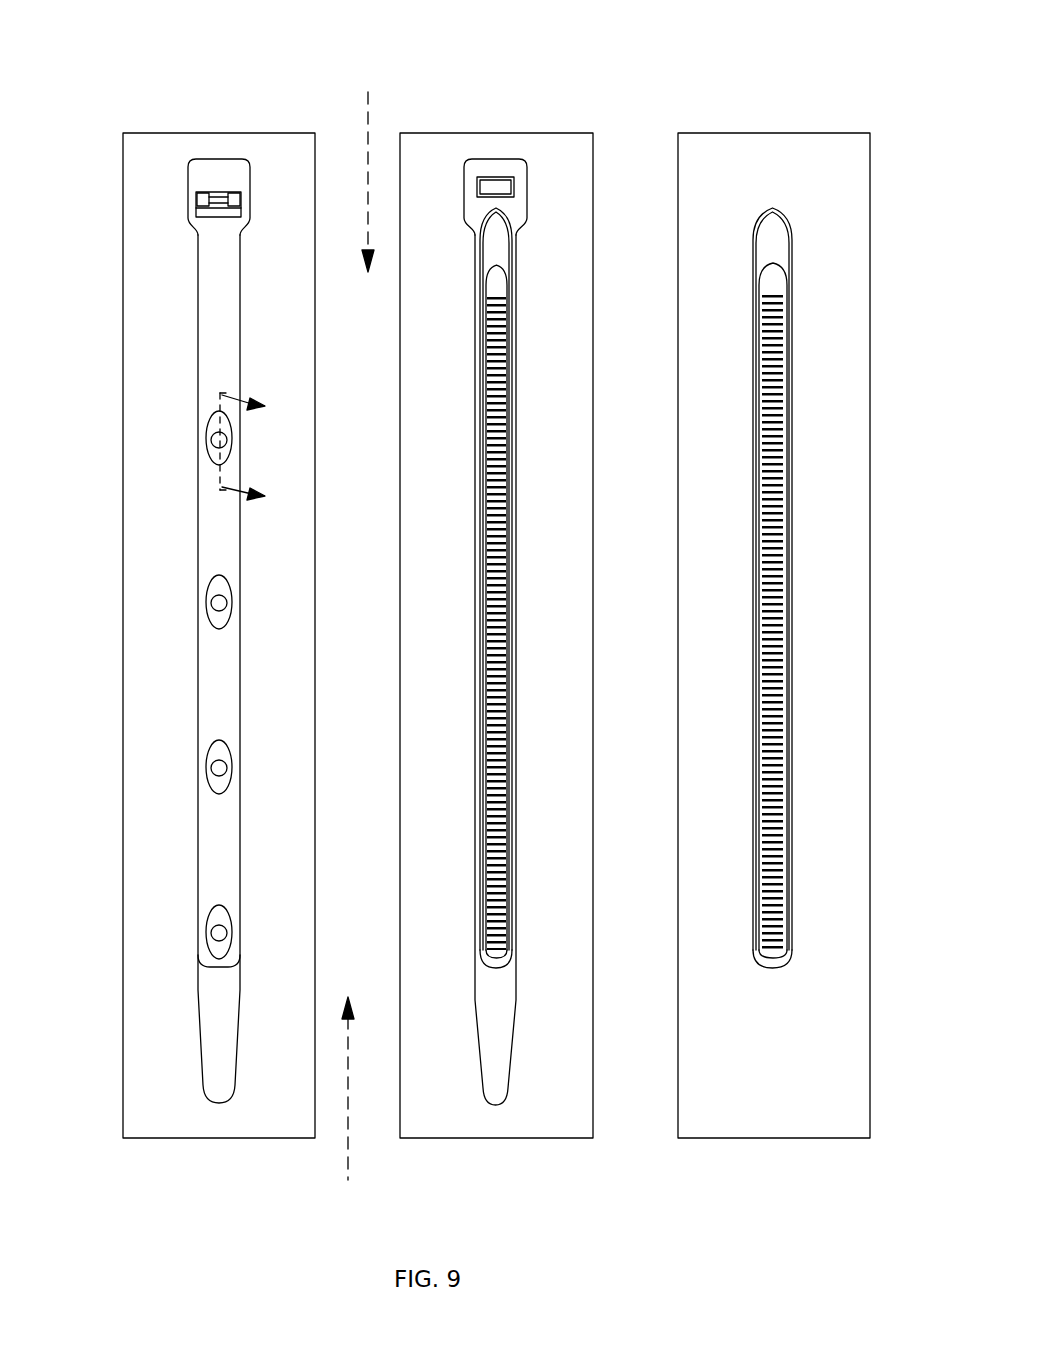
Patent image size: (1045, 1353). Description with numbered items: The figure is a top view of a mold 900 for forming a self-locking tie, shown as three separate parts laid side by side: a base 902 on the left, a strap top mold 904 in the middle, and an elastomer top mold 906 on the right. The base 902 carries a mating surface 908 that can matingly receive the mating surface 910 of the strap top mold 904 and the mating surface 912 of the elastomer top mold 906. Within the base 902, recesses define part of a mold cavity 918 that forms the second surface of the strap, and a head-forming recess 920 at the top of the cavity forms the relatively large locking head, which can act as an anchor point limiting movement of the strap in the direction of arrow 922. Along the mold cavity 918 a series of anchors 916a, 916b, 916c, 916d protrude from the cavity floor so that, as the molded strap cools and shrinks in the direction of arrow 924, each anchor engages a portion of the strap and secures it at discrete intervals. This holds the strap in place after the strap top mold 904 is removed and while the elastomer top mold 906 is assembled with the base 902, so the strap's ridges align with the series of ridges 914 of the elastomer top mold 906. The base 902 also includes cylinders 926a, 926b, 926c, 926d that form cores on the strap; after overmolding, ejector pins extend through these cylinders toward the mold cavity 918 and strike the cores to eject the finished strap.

The mold 900 is at (155, 94).
The base 902 is at (156, 1124).
The strap top mold 904 is at (553, 1117).
The elastomer top mold 906 is at (722, 1127).
The mating surface 908 is at (193, 143).
The mating surface 910 is at (544, 147).
The mating surface 912 is at (775, 152).
The series of ridges 914 is at (785, 587).
The anchor 916a is at (212, 442).
The anchor 916b is at (212, 606).
The anchor 916c is at (212, 770).
The anchor 916d is at (212, 935).
The mold cavity 918 is at (208, 303).
The head-forming recess 920 is at (205, 180).
The arrow 922 is at (368, 135).
The arrow 924 is at (350, 1140).
The cylinder 926a is at (212, 438).
The cylinder 926b is at (212, 602).
The cylinder 926c is at (212, 767).
The cylinder 926d is at (212, 932).